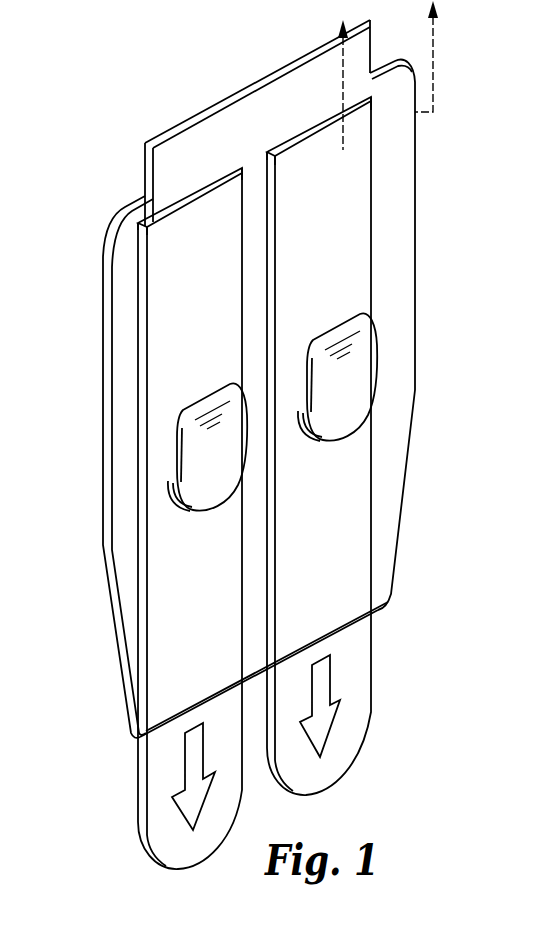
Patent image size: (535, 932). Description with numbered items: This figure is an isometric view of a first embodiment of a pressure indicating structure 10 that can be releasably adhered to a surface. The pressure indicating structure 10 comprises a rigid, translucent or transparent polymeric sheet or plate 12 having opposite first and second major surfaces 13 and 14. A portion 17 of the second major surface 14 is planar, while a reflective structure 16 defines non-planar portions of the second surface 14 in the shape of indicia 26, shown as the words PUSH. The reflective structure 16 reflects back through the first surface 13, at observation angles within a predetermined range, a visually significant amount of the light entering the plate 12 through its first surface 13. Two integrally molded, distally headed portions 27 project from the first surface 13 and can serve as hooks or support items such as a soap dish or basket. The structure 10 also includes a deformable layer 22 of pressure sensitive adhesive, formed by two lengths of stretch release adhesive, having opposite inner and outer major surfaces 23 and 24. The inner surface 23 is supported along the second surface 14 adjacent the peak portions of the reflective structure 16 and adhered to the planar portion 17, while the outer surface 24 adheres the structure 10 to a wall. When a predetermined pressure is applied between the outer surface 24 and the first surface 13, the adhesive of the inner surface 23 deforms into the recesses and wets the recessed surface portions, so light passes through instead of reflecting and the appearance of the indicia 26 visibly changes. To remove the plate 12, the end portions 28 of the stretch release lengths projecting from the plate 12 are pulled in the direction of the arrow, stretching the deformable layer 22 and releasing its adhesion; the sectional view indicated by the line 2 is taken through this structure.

The section line 2- 2 is at (386, 75).
The pressure indicating structure 10 is at (465, 208).
The plate 12 is at (405, 405).
The first major surface 13 is at (400, 168).
The second major surface 14 is at (103, 253).
The reflective structure 16 is at (158, 637).
The planar portion 17 is at (106, 299).
The deformable layer 22 is at (140, 416).
The inner major surface 23 is at (155, 678).
The outer major surface 24 is at (140, 349).
The indicia 26 is at (328, 155).
The headed portions 27 is at (220, 427).
The end portions 28 is at (155, 790).